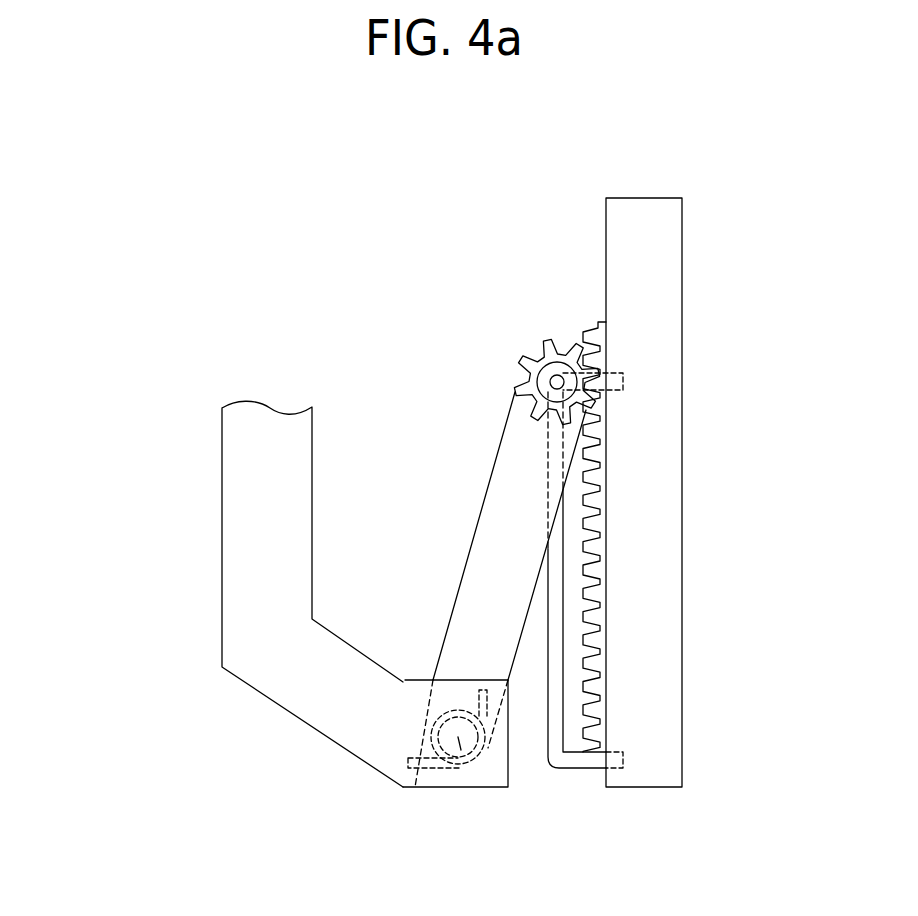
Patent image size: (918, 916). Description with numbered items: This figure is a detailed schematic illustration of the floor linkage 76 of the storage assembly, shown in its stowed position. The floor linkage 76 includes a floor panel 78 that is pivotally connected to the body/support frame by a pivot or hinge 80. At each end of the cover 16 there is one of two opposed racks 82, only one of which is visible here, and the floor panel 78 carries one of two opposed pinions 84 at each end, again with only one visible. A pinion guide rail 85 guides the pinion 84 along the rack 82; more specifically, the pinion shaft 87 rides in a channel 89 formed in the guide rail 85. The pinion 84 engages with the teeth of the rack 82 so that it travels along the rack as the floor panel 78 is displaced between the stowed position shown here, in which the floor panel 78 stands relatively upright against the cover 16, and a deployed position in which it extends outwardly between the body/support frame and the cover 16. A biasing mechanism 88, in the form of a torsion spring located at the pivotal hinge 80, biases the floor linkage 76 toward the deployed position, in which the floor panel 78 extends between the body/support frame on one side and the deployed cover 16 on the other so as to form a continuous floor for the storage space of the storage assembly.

The cover 16 is at (658, 520).
The floor linkage 76 is at (316, 291).
The floor panel 78 is at (505, 497).
The pivot or hinge 80 is at (461, 750).
The rack 82 is at (592, 666).
The pinion 84 is at (546, 345).
The pinion guide rail 85 is at (547, 647).
The pinion shaft 87 is at (530, 378).
The biasing mechanism 88 is at (416, 787).
The channel 89 is at (555, 605).